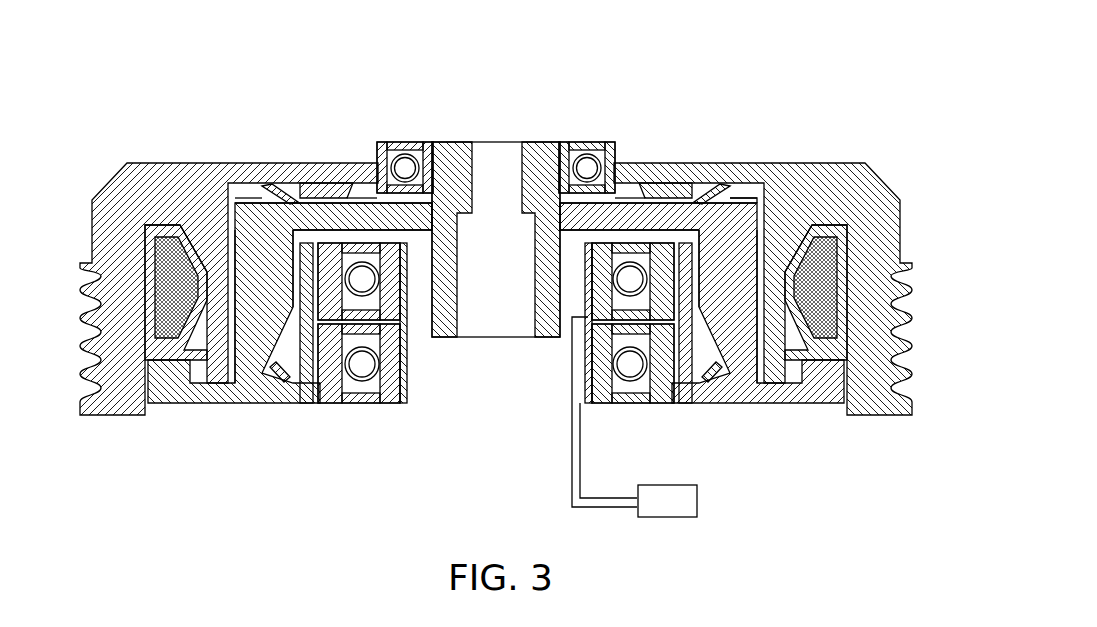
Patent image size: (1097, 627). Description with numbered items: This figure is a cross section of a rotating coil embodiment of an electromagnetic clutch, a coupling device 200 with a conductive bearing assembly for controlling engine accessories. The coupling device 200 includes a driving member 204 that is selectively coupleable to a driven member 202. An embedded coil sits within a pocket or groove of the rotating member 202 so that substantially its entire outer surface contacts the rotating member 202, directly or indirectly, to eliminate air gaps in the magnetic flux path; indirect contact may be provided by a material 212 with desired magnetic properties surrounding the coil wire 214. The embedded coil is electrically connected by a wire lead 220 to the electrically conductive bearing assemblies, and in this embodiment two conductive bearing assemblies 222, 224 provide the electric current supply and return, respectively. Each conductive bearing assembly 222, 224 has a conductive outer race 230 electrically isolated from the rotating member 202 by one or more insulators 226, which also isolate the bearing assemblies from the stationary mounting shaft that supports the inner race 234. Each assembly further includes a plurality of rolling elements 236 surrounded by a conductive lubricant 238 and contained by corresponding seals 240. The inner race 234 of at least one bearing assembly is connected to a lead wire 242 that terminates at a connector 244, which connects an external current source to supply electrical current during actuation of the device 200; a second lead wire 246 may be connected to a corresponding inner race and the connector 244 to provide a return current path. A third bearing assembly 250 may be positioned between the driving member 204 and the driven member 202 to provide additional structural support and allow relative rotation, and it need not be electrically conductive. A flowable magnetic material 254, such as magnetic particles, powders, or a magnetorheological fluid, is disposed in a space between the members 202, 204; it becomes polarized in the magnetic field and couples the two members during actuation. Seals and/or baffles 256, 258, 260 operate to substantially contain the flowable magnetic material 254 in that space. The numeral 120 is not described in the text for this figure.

The magnet 120 is at (834, 306).
The coupling device 200 is at (705, 140).
The driven member 202 is at (815, 153).
The driving member 204 is at (540, 133).
The material 212 is at (160, 225).
The coil wire 214 is at (162, 262).
The wire lead 220 is at (221, 427).
The conductive bearing assembly 222 is at (313, 243).
The conductive bearing assembly 224 is at (424, 393).
The insulator 226 is at (405, 353).
The conductive outer race 230 is at (258, 200).
The inner race 234 is at (355, 228).
The rolling elements 236 is at (405, 404).
The conductive lubricant 238 is at (345, 402).
The seals 240 is at (364, 385).
The lead wire 242 is at (572, 468).
The connector 244 is at (675, 518).
The second lead wire 246 is at (581, 448).
The third bearing assembly 250 is at (425, 133).
The flowable magnetic material 254 is at (236, 183).
The seal or baffle 256 is at (660, 188).
The seal or baffle 258 is at (738, 185).
The seal or baffle 260 is at (720, 385).